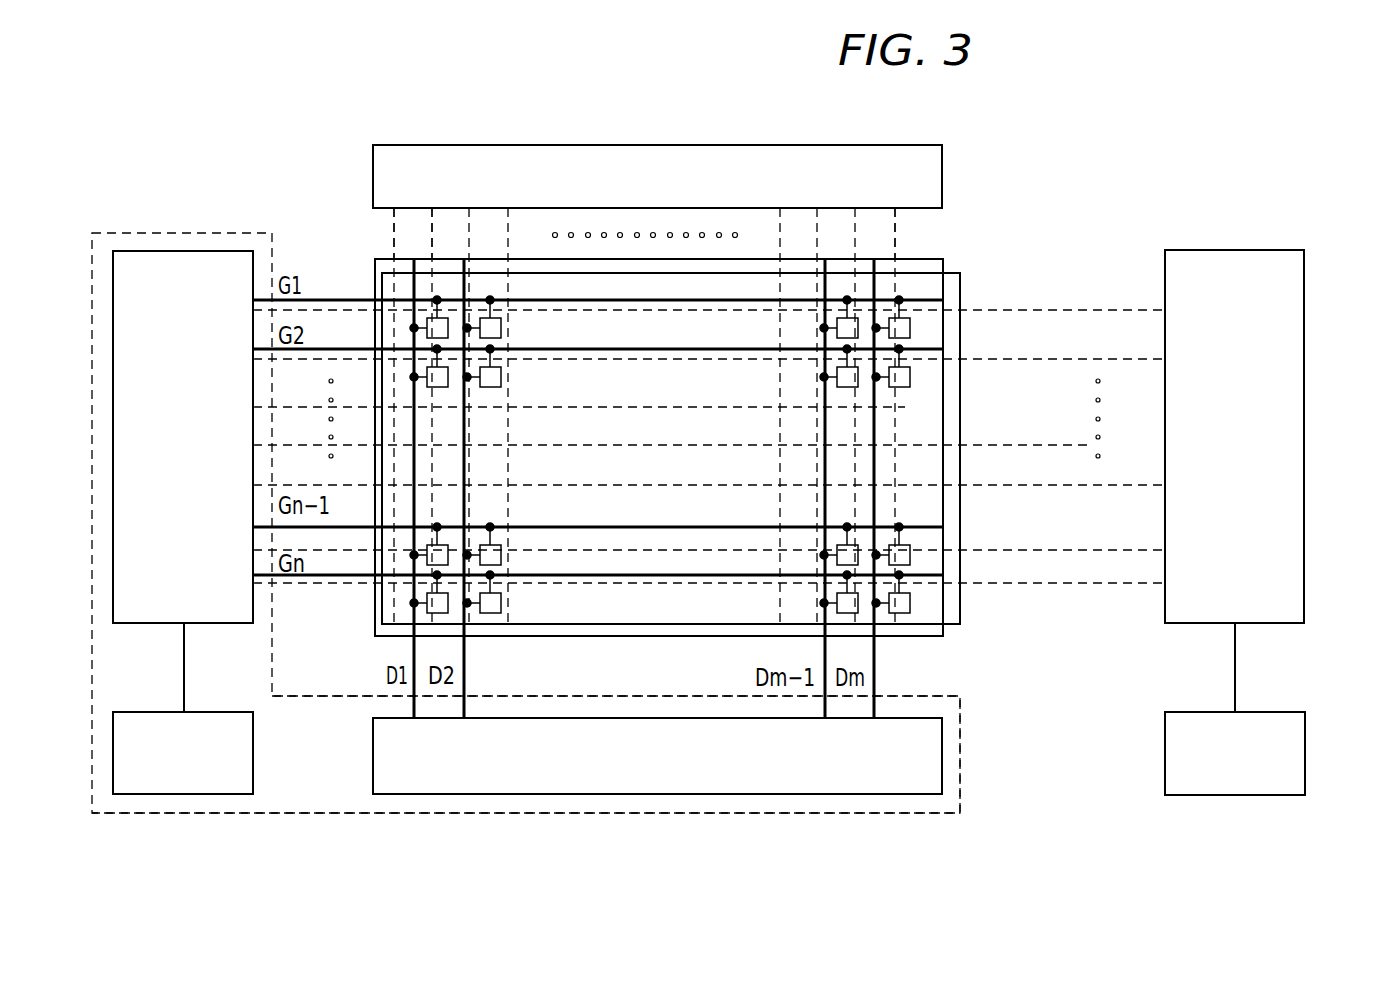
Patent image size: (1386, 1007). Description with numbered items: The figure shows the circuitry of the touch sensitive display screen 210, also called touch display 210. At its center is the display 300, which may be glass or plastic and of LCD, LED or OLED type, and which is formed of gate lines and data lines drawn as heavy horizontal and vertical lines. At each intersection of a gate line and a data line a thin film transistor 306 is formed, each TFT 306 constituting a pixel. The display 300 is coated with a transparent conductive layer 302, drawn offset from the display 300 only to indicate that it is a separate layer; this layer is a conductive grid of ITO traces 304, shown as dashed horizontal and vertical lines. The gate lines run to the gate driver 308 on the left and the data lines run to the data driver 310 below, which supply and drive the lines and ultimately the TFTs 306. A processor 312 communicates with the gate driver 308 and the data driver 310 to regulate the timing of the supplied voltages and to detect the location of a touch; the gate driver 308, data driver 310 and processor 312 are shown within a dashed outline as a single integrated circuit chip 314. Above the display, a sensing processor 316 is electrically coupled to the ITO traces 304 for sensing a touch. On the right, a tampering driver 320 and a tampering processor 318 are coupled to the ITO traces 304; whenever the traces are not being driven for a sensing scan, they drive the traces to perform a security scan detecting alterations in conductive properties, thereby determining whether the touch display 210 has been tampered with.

The touch sensitive display screen 210 is at (196, 89).
The display 300 is at (943, 637).
The transparent conductive layer 302 is at (960, 618).
The ITO traces 304 is at (893, 468).
The thin film transistor 306 is at (910, 376).
The gate driver 308 is at (152, 250).
The data driver 310 is at (452, 797).
The processor 312 is at (180, 797).
The integrated circuit chip 314 is at (962, 778).
The sensing processor 316 is at (640, 140).
The tampering processor 318 is at (1307, 757).
The tampering driver 320 is at (1245, 248).